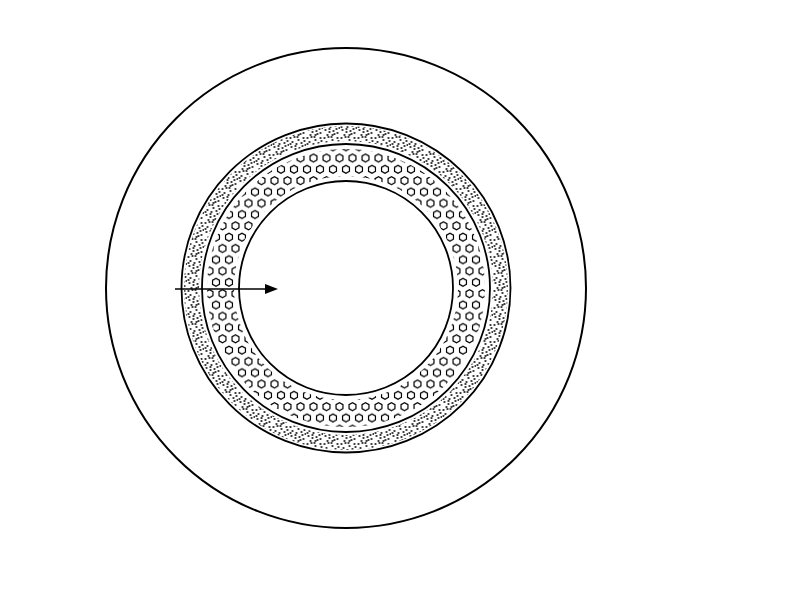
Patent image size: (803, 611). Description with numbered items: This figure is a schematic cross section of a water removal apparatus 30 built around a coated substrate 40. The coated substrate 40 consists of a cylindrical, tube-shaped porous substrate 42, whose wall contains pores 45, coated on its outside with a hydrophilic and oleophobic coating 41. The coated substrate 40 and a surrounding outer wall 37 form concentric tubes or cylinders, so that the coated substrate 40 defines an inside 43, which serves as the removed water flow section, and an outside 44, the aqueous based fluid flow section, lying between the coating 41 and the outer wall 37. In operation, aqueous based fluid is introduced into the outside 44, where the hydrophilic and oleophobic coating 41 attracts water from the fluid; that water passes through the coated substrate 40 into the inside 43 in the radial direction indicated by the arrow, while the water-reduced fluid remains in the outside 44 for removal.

The water removal apparatus 30 is at (512, 76).
The outer wall 37 is at (152, 455).
The coated substrate 40 is at (343, 296).
The hydrophilic and oleophobic coating 41 is at (457, 410).
The porous substrate 42 is at (477, 189).
The inside (removed water flow section) 43 is at (357, 299).
The outside (aqueous based fluid flow section) 44 is at (281, 111).
The pores 45 is at (477, 262).